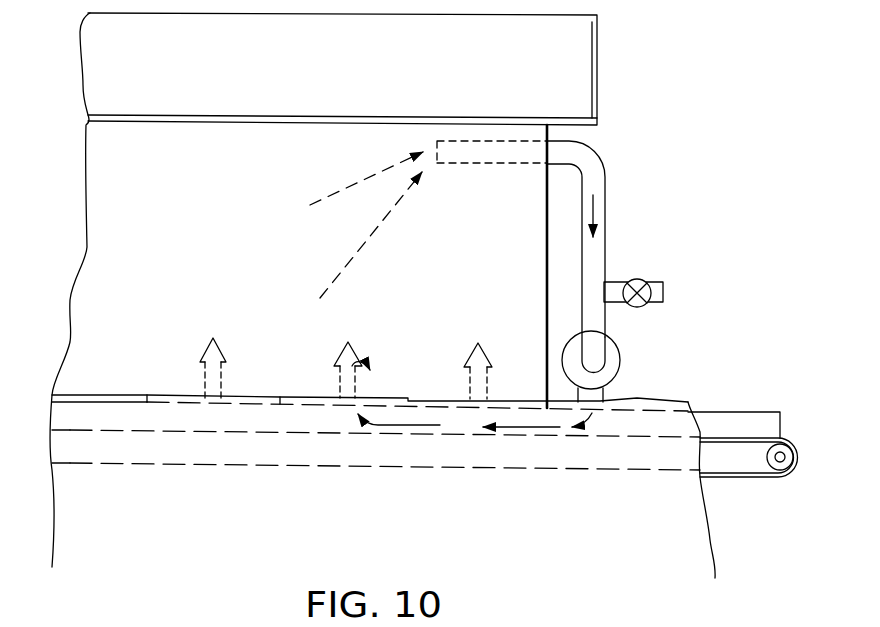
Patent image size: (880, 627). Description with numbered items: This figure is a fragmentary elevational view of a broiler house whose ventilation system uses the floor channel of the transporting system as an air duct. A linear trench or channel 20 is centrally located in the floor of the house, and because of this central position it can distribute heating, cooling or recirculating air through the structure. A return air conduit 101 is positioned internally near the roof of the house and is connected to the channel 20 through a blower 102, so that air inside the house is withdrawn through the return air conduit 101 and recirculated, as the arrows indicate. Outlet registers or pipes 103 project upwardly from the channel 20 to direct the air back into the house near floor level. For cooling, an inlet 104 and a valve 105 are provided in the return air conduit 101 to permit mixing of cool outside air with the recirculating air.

The trench or channel 20 is at (648, 406).
The return air conduit 101 is at (513, 158).
The blower 102 is at (619, 366).
The outlet registers or pipes 103 is at (222, 381).
The inlet 104 is at (614, 282).
The valve 105 is at (646, 282).